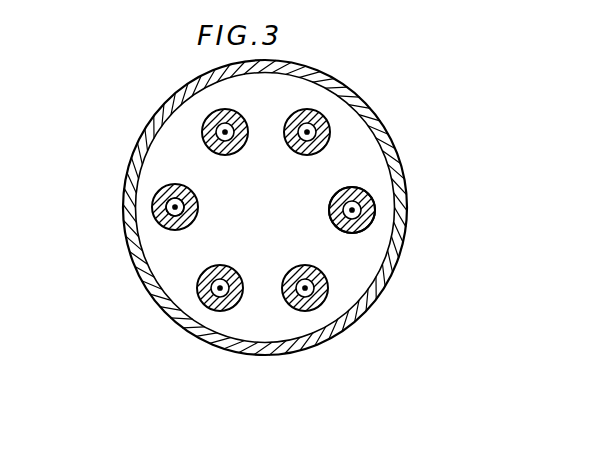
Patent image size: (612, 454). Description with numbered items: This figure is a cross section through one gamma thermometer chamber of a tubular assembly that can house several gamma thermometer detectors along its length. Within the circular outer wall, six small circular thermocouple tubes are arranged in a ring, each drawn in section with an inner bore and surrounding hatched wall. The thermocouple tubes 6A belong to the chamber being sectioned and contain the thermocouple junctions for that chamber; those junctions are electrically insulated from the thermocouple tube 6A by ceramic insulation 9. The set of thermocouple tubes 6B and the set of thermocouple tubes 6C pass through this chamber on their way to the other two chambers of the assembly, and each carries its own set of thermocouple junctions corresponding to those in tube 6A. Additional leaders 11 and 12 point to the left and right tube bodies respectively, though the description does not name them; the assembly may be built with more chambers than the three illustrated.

The thermocouple tube 6A is at (155, 195).
The thermocouple tube 6B is at (213, 112).
The thermocouple tube 6C is at (330, 124).
The ceramic insulation 9 is at (372, 222).
The inner bore 11 is at (166, 207).
The tube body 12 is at (373, 216).